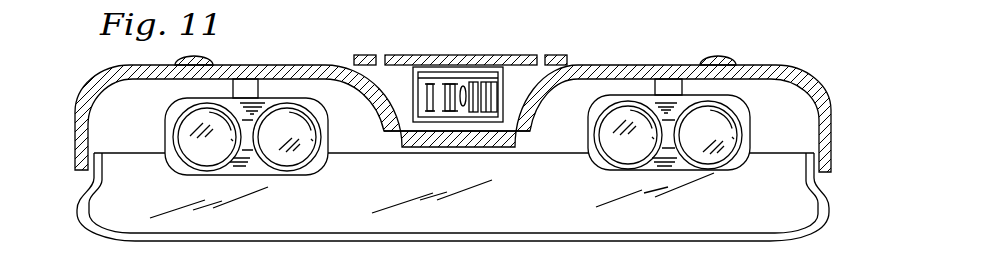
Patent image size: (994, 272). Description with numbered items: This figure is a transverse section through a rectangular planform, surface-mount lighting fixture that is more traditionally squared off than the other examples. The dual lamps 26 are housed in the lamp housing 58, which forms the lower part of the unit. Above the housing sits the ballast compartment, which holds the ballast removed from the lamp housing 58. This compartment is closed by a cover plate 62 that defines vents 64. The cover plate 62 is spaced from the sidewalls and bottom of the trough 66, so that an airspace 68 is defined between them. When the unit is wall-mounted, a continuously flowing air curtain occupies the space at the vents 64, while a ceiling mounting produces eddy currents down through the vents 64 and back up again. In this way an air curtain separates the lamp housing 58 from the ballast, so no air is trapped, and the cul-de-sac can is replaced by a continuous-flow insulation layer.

The lamp housing 58 is at (88, 100).
The cover plate 62 is at (459, 61).
The vents 64 is at (382, 62).
The trough 66 is at (404, 104).
The airspace 68 is at (515, 82).
The dual lamps 26 is at (619, 148).